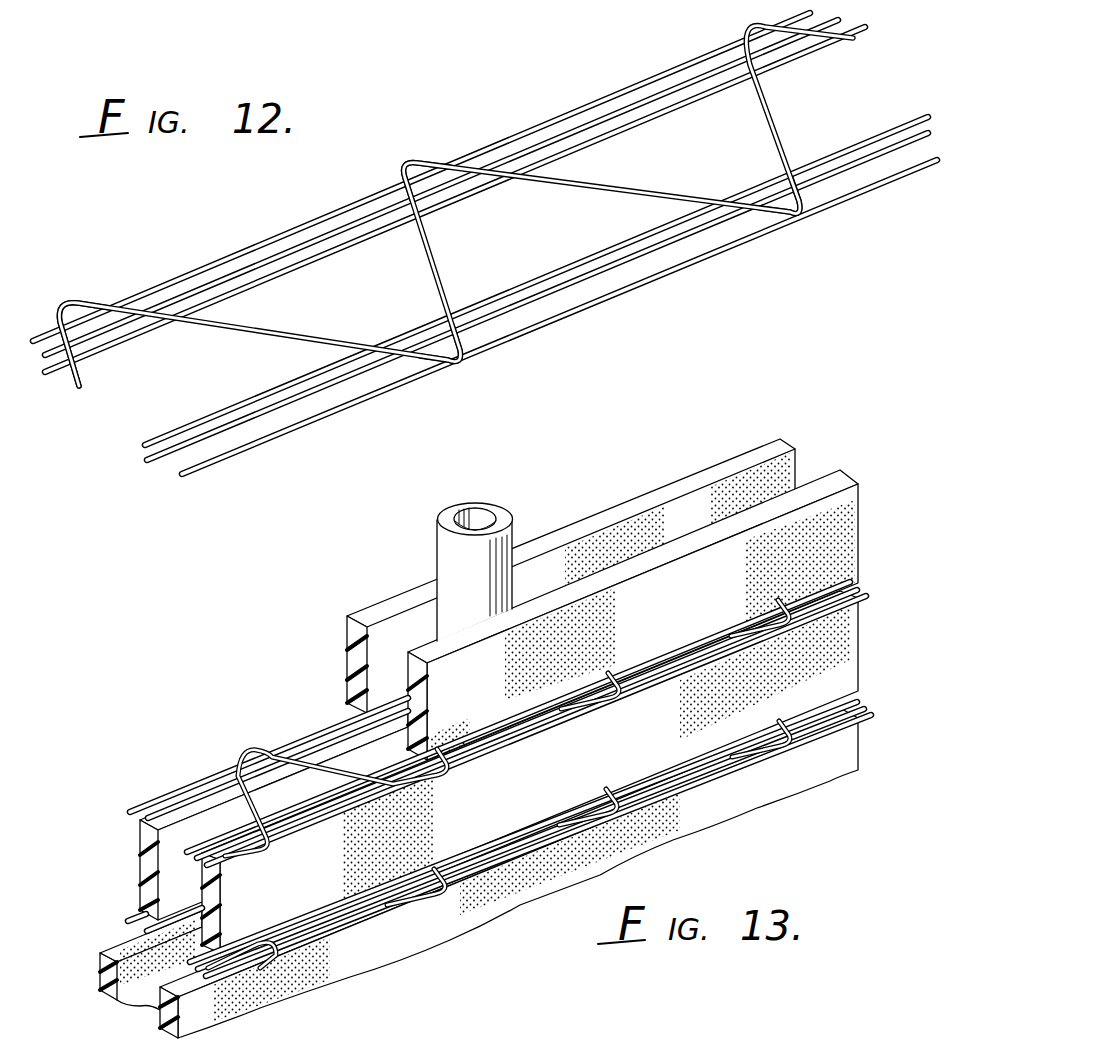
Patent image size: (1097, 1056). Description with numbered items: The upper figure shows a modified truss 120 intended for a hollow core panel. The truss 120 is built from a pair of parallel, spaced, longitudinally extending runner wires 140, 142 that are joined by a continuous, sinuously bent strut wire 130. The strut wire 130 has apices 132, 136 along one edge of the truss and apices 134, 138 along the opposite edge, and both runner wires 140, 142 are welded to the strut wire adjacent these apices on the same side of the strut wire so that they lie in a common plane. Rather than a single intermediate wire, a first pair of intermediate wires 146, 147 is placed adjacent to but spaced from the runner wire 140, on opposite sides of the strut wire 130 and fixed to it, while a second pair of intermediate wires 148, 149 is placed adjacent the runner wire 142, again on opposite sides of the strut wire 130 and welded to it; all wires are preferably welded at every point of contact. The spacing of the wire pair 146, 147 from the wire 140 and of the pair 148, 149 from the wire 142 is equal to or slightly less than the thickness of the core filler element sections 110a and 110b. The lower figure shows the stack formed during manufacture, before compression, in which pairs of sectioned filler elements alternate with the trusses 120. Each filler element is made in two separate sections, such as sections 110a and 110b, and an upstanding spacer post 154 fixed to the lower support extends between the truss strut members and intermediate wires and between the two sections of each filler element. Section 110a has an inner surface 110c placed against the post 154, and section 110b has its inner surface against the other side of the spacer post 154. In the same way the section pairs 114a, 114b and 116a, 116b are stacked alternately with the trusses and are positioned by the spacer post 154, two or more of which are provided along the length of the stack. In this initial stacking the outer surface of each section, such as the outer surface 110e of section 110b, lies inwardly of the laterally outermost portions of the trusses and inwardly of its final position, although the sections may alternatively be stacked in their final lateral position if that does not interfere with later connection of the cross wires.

In FIG. 12, the truss 120 is at (482, 253).
In FIG. 13, the truss 120 is at (218, 773).
In FIG. 12, the strut wire 130 is at (440, 215).
In FIG. 12, the apex 132 is at (72, 305).
In FIG. 12, the apex 134 is at (443, 367).
In FIG. 12, the apex 136 is at (400, 170).
In FIG. 12, the apex 138 is at (796, 222).
In FIG. 12, the runner wire 142 is at (222, 261).
In FIG. 12, the intermediate wire 148 is at (124, 334).
In FIG. 12, the intermediate wire 149 is at (95, 362).
In FIG. 12, the intermediate wire 146 is at (177, 432).
In FIG. 12, the intermediate wire 147 is at (172, 453).
In FIG. 12, the runner wire 140 is at (229, 460).
In FIG. 13, the filler element section 110a is at (347, 615).
In FIG. 13, the filler element section 110b is at (813, 478).
In FIG. 13, the inner surface 110c is at (417, 613).
In FIG. 13, the outer surface 110e is at (848, 523).
In FIG. 13, the spacer post 154 is at (437, 551).
In FIG. 13, the filler element section 114a is at (158, 866).
In FIG. 13, the filler element section 114b is at (318, 899).
In FIG. 13, the filler element section 116a is at (107, 979).
In FIG. 13, the filler element section 116b is at (204, 1020).